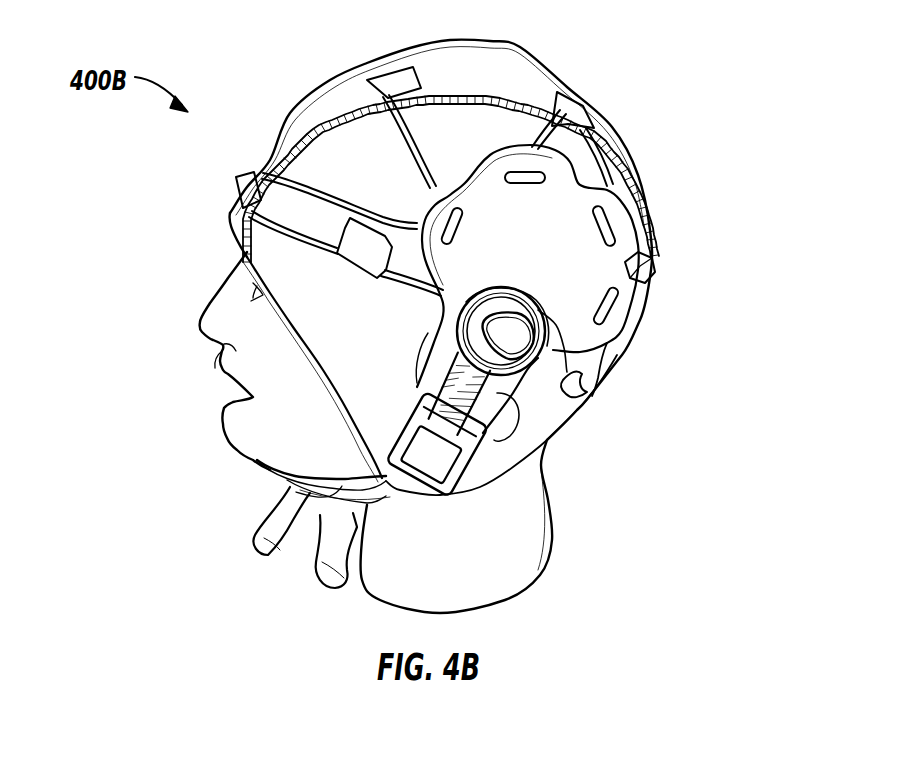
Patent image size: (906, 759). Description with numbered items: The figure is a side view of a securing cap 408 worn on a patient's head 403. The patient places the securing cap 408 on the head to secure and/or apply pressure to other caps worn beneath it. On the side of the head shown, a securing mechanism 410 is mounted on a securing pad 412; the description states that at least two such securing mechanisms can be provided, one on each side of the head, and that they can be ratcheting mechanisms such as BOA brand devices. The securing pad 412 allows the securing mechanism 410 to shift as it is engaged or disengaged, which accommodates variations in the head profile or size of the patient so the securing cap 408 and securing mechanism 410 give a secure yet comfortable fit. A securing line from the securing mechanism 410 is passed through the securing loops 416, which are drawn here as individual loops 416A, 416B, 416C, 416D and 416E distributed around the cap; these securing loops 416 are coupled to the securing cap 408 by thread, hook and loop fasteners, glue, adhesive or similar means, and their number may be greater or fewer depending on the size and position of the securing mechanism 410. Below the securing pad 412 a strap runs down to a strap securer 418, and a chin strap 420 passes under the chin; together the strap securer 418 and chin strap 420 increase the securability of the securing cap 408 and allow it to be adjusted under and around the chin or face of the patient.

The head of user 403 is at (535, 542).
The securing cap 408 is at (328, 330).
The securing mechanism 410 is at (497, 338).
The securing pad 412 is at (570, 253).
The securing loops 416 is at (451, 195).
The securing loop 416A is at (242, 190).
The securing loop 416B is at (383, 84).
The securing loop 416C is at (583, 106).
The securing loop 416D is at (658, 256).
The securing loop 416E is at (592, 394).
The strap securer 418 is at (460, 460).
The chin strap 420 is at (314, 468).